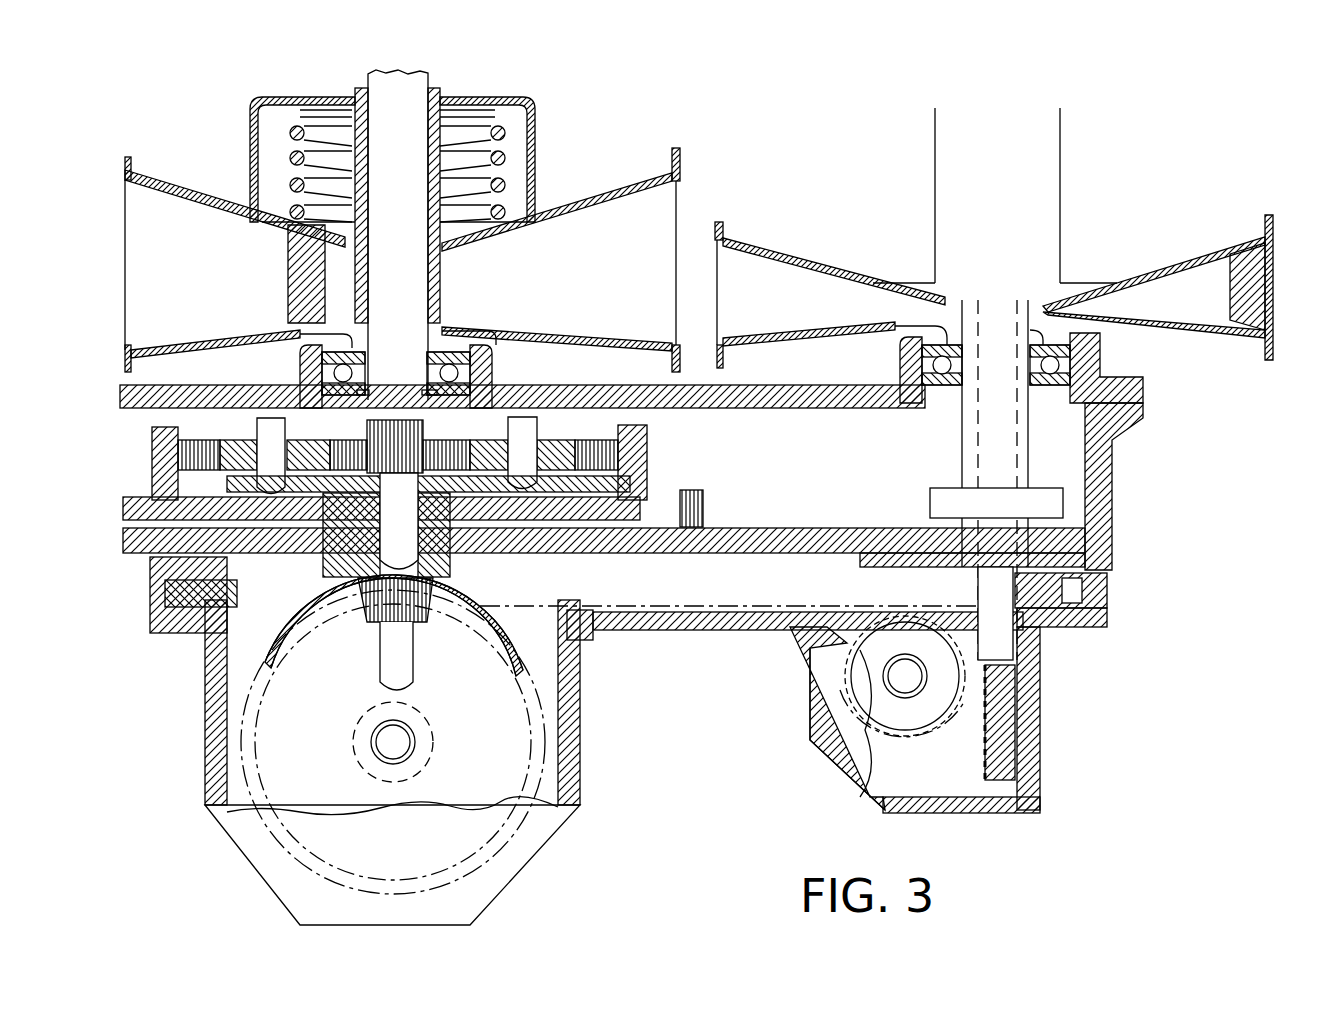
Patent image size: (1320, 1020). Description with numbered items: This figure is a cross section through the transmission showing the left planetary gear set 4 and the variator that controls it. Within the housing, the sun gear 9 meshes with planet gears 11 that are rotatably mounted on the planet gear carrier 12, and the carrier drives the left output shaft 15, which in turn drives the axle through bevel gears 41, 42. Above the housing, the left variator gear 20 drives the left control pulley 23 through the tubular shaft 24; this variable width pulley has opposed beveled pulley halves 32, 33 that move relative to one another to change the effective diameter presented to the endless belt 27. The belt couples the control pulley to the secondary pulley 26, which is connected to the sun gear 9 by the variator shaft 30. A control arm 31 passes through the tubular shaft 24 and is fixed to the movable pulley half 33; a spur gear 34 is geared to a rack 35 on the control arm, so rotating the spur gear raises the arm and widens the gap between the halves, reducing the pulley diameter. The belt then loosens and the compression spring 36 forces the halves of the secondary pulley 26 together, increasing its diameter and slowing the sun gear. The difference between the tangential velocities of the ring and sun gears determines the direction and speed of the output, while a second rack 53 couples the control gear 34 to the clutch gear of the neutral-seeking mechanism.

The left planetary gear set 4 is at (636, 458).
The sun gear 9 is at (425, 438).
The planet gears 11 is at (246, 446).
The planet gear carrier 12 is at (555, 484).
The left output shaft 15 is at (337, 628).
The left variator gear 20 is at (1068, 500).
The left control pulley 23 is at (1232, 340).
The shaft 24 is at (1100, 418).
The secondary pulley 26 is at (616, 338).
The endless belt 27 is at (302, 262).
The variator shaft 30 is at (398, 382).
The control arm 31 is at (1078, 597).
The pulley half 32 is at (1140, 320).
The movable pulley half 33 is at (1207, 258).
The spur gear 34 is at (866, 712).
The rack 35 is at (1020, 708).
The compression spring 36 is at (530, 187).
The bevel gear 41 is at (382, 624).
The bevel gear 42 is at (275, 680).
The second rack 53 is at (681, 590).